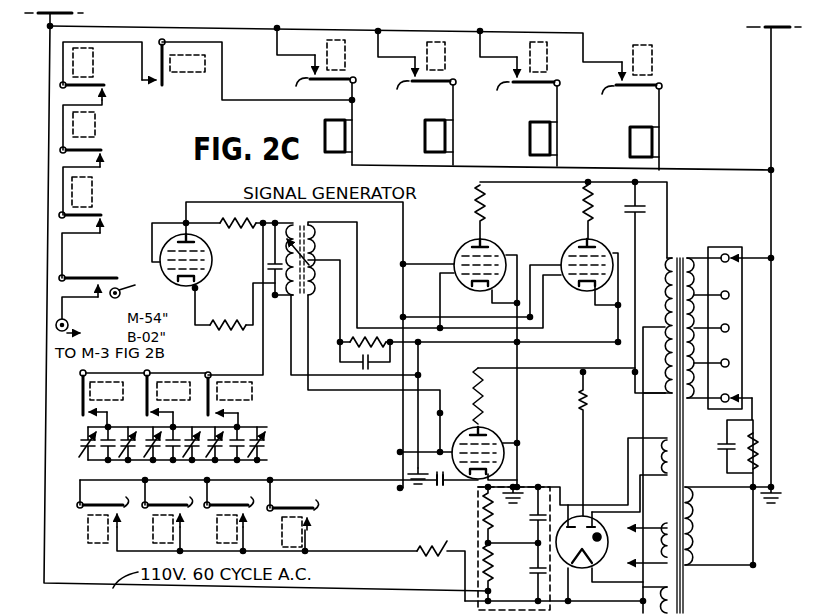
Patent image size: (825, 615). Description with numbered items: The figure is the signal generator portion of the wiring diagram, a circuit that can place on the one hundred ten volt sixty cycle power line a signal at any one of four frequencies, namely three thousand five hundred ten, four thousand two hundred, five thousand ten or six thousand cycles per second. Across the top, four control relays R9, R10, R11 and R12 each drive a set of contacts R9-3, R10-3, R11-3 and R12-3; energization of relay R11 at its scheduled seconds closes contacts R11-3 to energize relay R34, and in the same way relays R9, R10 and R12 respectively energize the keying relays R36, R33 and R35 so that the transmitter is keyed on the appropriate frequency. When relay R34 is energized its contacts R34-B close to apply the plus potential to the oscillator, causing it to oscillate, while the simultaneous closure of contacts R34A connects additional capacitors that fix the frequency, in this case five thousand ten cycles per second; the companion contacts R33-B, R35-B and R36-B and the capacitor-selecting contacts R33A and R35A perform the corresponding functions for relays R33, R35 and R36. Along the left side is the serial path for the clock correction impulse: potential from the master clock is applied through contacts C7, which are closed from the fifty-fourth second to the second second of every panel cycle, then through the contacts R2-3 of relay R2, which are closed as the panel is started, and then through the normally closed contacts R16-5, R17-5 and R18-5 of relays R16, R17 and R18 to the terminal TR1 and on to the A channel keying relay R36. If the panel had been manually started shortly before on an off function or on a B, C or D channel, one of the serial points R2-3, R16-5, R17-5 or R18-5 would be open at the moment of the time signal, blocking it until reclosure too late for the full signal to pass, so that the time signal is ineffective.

The relay R17 is at (93, 72).
The serial contacts of relay R17 R17-5 is at (110, 87).
The relay R18 is at (207, 73).
The serial contacts of relay R18 R18-5 is at (157, 87).
The relay R16 is at (90, 137).
The serial contacts of relay R16 R16-5 is at (104, 157).
The relay R2 is at (94, 192).
The contacts of relay R2 R2-3 is at (105, 215).
The terminal TR1 is at (68, 326).
The contacts C7 is at (128, 297).
The relay R9 is at (344, 68).
The contacts of relay R9 R9-3 is at (316, 96).
The relay R10 is at (462, 60).
The contacts of relay R10 R10-3 is at (417, 98).
The relay R11 is at (560, 60).
The contacts of relay R11 R11-3 is at (520, 98).
The relay R12 is at (668, 63).
The contacts of relay R12 R12-3 is at (628, 116).
The A channel keying relay R36 is at (345, 140).
The keying relay R33 is at (445, 140).
The keying relay R34 is at (550, 143).
The keying relay R35 is at (652, 145).
The contacts of relay R33 R33A is at (88, 411).
The contacts of relay R34 R34A is at (150, 412).
The contacts of relay R35 R35A is at (222, 411).
The contacts of relay R35 R35-B is at (103, 496).
The contacts of relay R34 R34-B is at (167, 496).
The contacts of relay R33 R33-B is at (229, 496).
The contacts of relay R36 R36-B is at (293, 499).